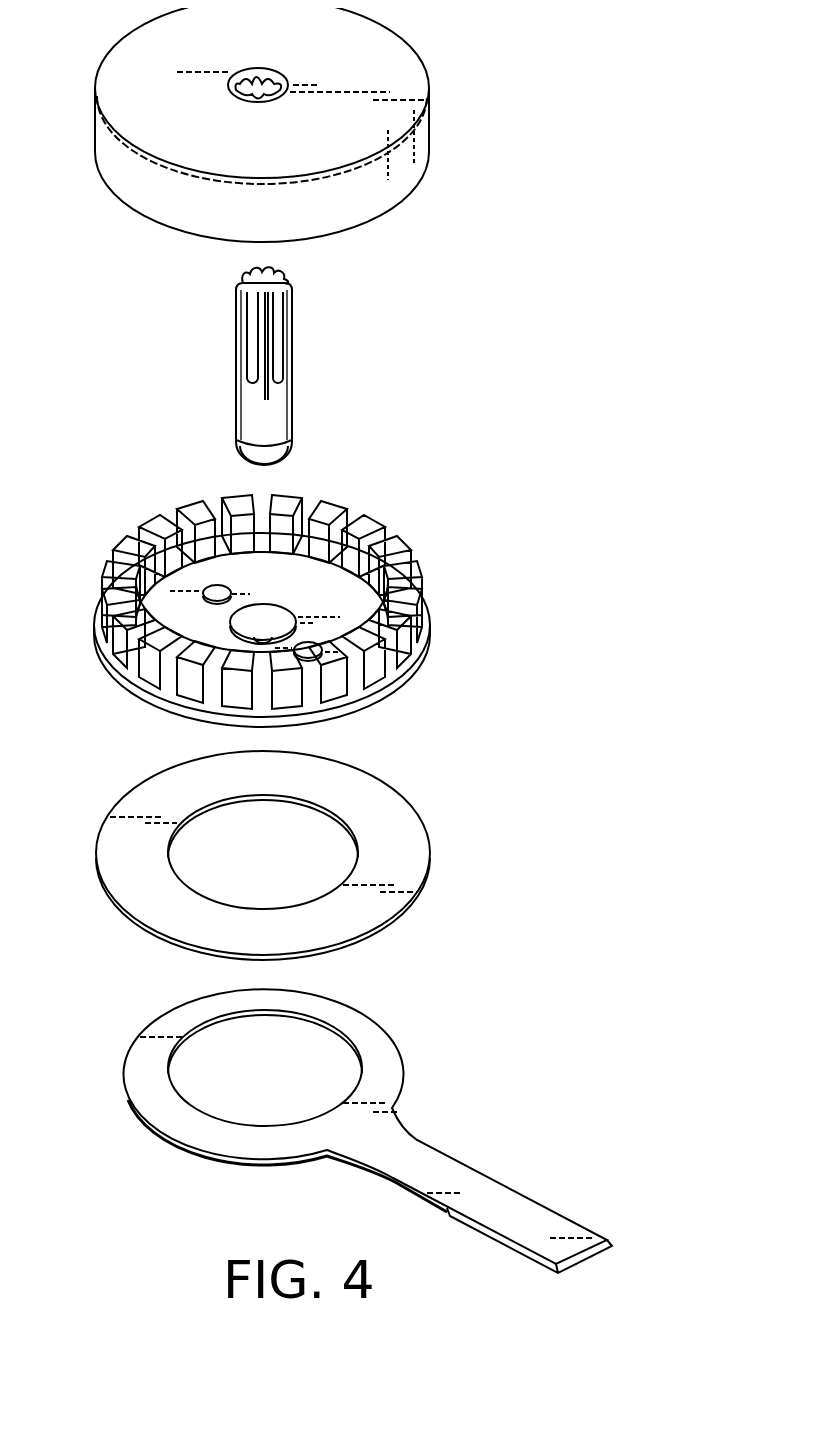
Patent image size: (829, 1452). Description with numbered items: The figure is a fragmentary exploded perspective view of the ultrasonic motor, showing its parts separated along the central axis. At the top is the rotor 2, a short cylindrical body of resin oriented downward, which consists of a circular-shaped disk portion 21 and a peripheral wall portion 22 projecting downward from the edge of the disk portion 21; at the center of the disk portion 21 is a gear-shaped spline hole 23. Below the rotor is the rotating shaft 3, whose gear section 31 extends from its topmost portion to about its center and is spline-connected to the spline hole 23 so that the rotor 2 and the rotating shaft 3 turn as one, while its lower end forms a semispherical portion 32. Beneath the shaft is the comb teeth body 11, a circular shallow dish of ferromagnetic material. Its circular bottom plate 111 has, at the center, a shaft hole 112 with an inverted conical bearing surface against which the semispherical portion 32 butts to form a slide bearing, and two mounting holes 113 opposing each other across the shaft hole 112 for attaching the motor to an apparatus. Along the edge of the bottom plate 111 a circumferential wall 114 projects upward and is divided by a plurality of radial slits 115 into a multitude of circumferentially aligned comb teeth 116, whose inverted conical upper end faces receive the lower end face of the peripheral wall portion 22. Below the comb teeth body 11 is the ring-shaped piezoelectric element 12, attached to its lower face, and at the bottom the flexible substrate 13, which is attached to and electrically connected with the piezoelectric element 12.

The rotor 2 is at (283, 131).
The disk portion 21 is at (405, 68).
The peripheral wall portion 22 is at (325, 203).
The spline hole 23 is at (265, 67).
The rotating shaft 3 is at (260, 374).
The gear section 31 is at (245, 318).
The semispherical portion 32 is at (272, 461).
The comb teeth body 11 is at (282, 601).
The bottom plate 111 is at (207, 568).
The shaft hole 112 is at (265, 618).
The mounting holes 113 is at (217, 600).
The circumferential wall 114 is at (428, 607).
The radial slits 115 is at (127, 663).
The comb teeth 116 is at (400, 560).
The piezoelectric element 12 is at (167, 913).
The flexible substrate 13 is at (210, 1135).